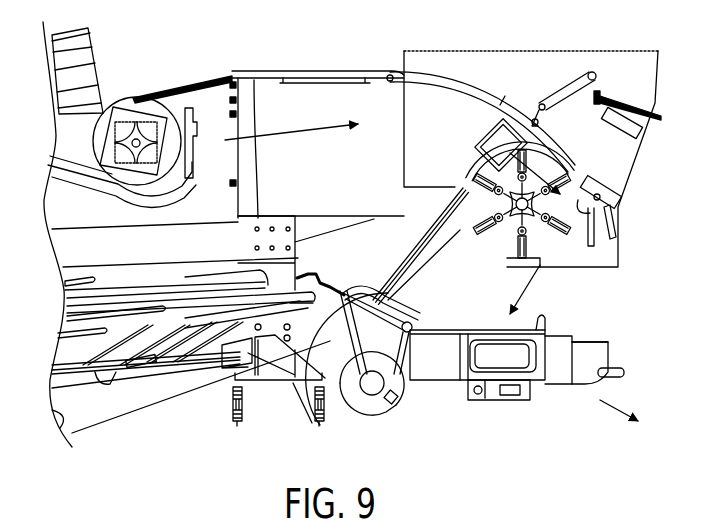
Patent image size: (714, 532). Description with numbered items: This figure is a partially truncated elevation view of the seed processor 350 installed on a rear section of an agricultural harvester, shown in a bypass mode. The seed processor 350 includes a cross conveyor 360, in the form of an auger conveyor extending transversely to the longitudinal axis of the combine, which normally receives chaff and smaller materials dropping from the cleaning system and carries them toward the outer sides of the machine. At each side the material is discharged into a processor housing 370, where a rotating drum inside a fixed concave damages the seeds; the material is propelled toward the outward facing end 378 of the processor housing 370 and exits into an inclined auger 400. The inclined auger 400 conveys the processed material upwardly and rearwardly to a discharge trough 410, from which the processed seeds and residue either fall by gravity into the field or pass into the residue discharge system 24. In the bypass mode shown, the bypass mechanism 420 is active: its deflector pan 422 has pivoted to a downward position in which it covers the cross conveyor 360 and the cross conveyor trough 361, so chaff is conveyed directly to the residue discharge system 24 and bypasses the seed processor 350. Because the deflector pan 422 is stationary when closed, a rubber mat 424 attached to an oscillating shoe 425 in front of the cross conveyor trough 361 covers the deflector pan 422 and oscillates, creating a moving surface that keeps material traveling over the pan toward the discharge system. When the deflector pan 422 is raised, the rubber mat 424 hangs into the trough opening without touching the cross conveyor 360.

The residue discharge system 24 is at (608, 328).
The seed processor 350 is at (412, 398).
The cross conveyor 360 is at (370, 398).
The cross conveyor trough 361 is at (331, 380).
The processor housing 370 is at (380, 425).
The outward facing end 378 is at (392, 408).
The inclined auger 400 is at (420, 268).
The discharge trough 410 is at (478, 160).
The bypass mechanism 420 is at (396, 298).
The deflector pan 422 is at (301, 398).
The rubber mat 424 is at (415, 308).
The oscillating shoe 425 is at (346, 290).